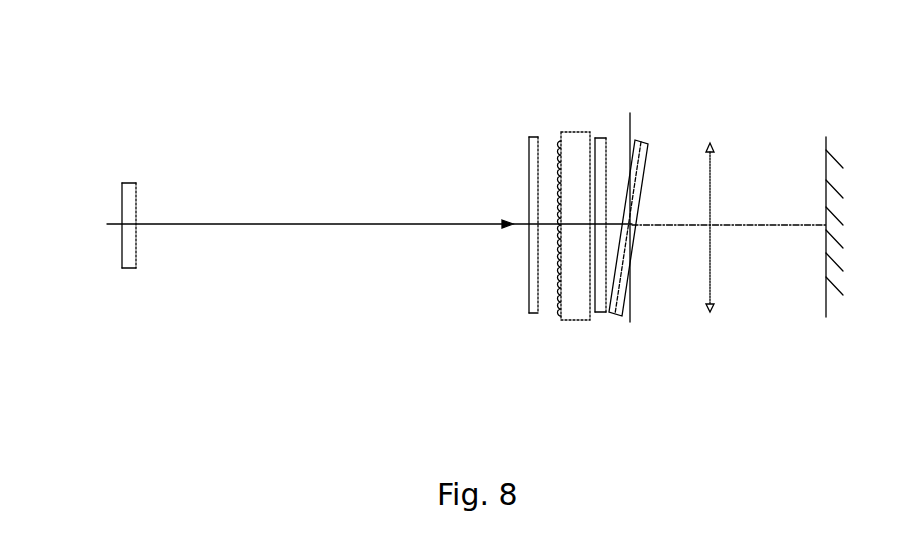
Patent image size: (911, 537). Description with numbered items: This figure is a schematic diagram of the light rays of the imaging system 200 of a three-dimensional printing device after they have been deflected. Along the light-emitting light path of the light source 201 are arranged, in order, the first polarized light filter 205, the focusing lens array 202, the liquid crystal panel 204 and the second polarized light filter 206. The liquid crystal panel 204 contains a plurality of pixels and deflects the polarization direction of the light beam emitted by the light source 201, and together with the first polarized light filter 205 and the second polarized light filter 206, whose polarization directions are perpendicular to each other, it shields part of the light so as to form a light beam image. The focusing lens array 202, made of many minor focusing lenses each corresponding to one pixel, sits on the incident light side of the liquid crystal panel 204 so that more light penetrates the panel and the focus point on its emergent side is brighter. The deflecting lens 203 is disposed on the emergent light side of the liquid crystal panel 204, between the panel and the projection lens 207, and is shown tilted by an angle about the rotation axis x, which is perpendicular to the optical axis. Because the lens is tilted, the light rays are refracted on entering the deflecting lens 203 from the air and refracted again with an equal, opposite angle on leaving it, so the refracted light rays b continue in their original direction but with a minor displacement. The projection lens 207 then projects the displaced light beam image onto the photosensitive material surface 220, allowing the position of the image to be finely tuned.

The imaging system 200 is at (444, 82).
The light source 201 is at (125, 258).
The focusing lens array 202 is at (558, 150).
The deflecting lens 203 is at (645, 142).
The liquid crystal panel 204 is at (575, 320).
The first polarized light filter 205 is at (532, 313).
The second polarized light filter 206 is at (601, 312).
The projection lens 207 is at (712, 312).
The photosensitive material surface 220 is at (829, 307).
The refracted light rays b is at (792, 228).